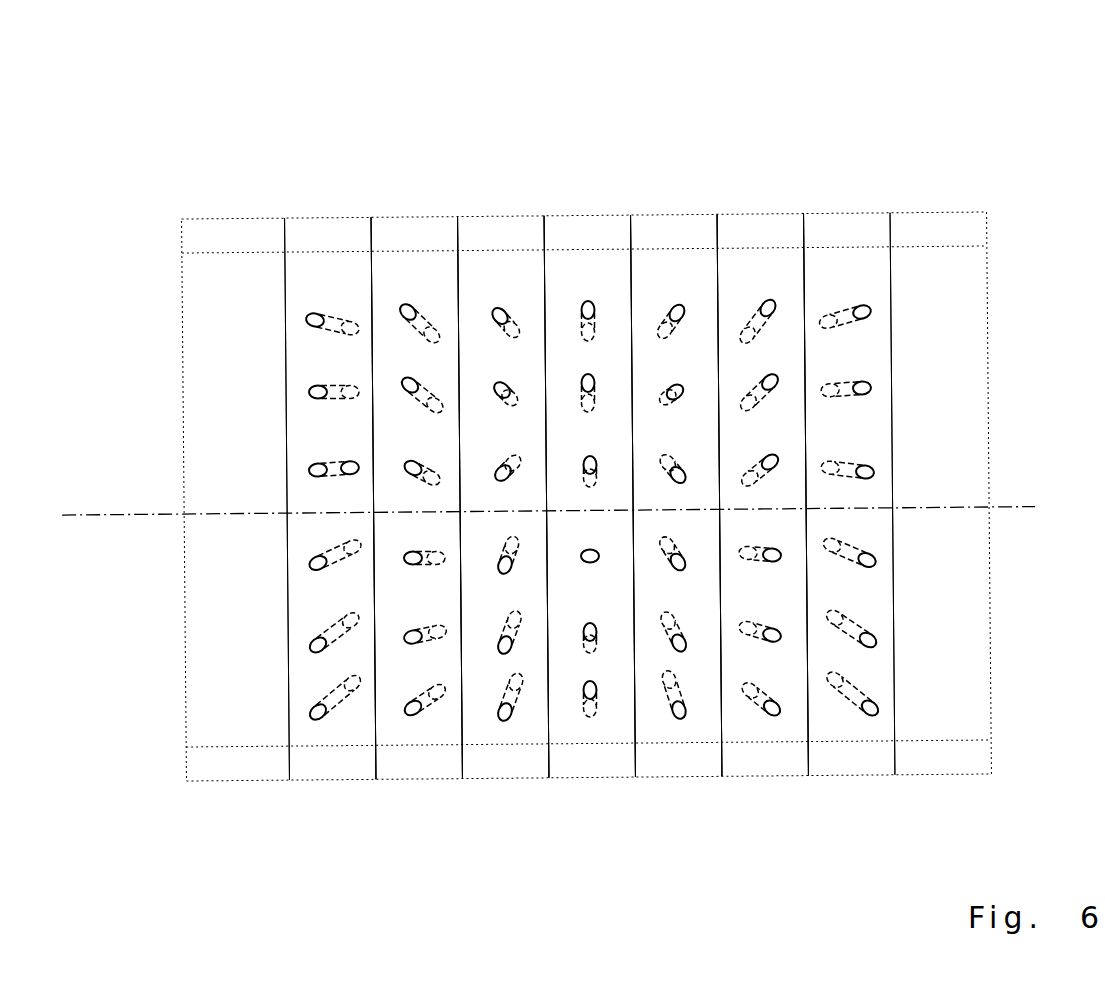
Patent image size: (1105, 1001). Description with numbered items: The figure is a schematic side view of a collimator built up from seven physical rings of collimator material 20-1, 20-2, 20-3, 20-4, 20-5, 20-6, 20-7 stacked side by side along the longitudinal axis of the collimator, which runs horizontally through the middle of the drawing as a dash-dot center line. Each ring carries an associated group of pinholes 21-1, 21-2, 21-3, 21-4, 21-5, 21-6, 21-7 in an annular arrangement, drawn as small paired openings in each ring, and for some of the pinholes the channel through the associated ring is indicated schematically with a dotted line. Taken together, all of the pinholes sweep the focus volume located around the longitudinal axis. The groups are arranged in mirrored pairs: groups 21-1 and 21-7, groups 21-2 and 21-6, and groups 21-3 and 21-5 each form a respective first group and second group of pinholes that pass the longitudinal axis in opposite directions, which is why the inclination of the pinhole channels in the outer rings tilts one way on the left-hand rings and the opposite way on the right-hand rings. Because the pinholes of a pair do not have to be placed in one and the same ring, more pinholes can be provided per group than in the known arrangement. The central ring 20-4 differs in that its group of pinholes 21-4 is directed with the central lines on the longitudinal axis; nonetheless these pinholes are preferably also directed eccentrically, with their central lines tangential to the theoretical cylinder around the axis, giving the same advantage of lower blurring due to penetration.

The ring of collimator material 20-1 is at (333, 778).
The ring of collimator material 20-2 is at (418, 778).
The ring of collimator material 20-3 is at (505, 777).
The central ring 20-4 is at (590, 777).
The ring of collimator material 20-5 is at (680, 776).
The ring of collimator material 20-6 is at (765, 776).
The ring of collimator material 20-7 is at (855, 775).
The group of pinholes 21-1 is at (315, 307).
The group of pinholes 21-2 is at (407, 300).
The group of pinholes 21-3 is at (502, 300).
The group of pinholes 21-4 is at (587, 297).
The group of pinholes 21-5 is at (678, 300).
The group of pinholes 21-6 is at (767, 295).
The group of pinholes 21-7 is at (858, 295).